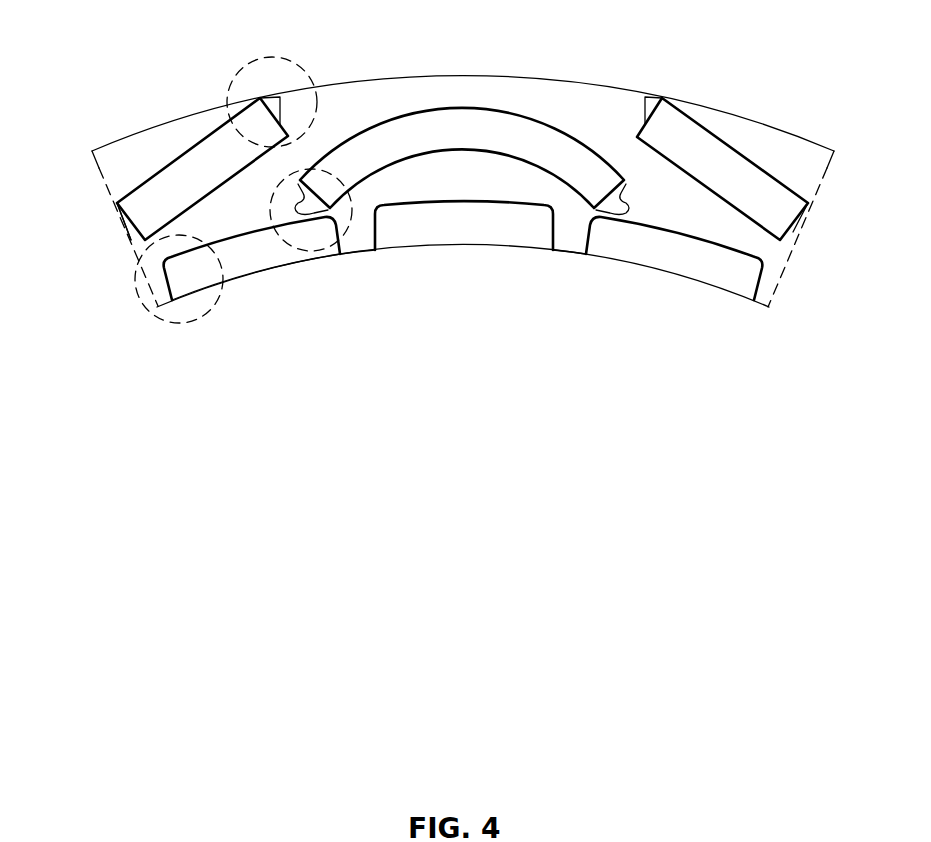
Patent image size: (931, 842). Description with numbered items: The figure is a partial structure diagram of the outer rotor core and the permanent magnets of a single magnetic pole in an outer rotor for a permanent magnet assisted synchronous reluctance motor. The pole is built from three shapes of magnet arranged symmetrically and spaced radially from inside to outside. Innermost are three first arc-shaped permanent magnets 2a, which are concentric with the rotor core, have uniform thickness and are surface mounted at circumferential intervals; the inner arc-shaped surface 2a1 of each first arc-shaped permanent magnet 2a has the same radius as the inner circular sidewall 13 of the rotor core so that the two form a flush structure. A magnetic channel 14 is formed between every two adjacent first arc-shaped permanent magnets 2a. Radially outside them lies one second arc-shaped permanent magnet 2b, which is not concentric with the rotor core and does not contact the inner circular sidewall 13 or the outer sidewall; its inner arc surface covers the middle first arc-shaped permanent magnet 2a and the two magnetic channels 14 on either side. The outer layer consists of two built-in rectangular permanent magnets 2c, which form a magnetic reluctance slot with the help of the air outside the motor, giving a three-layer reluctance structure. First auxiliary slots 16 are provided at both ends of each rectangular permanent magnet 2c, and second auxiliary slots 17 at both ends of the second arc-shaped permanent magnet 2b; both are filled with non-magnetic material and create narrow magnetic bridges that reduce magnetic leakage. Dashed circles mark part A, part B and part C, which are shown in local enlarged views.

The first arc-shaped permanent magnet 2a is at (215, 258).
The inner arc-shaped surface 2a1 is at (253, 277).
The magnetic channel 14 is at (357, 237).
The second auxiliary slot 17 is at (615, 207).
The inner circular sidewall 13 is at (753, 298).
The second arc-shaped permanent magnet 2b is at (460, 132).
The rectangular permanent magnet 2c is at (170, 184).
The first auxiliary slot 16 is at (655, 98).
The part A is at (240, 72).
The part B is at (332, 172).
The part C is at (137, 300).